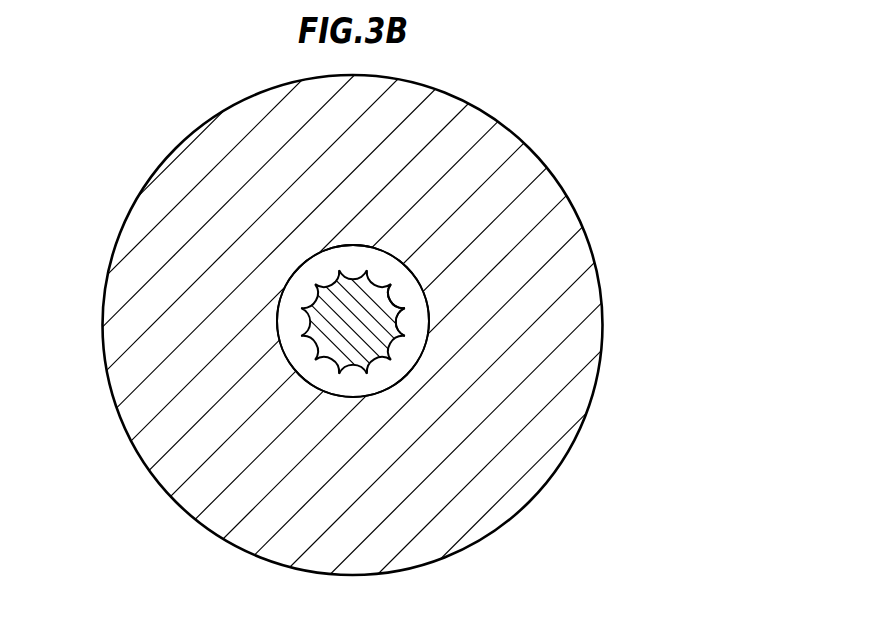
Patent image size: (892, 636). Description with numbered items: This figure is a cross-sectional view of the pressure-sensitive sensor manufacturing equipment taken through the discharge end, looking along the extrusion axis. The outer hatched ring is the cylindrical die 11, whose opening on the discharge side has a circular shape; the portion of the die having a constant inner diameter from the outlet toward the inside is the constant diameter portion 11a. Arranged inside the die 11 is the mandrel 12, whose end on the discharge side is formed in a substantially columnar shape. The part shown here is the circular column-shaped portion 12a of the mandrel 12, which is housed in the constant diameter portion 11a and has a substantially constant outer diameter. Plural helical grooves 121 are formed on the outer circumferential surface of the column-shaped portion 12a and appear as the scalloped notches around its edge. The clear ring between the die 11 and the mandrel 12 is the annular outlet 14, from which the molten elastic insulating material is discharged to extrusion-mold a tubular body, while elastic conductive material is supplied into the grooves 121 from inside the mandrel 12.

The die 11 is at (512, 135).
The constant diameter portion 11a is at (527, 168).
The mandrel 12 is at (399, 300).
The column-shaped portion 12a is at (396, 313).
The helical grooves 121 is at (400, 325).
The annular outlet 14 is at (405, 357).